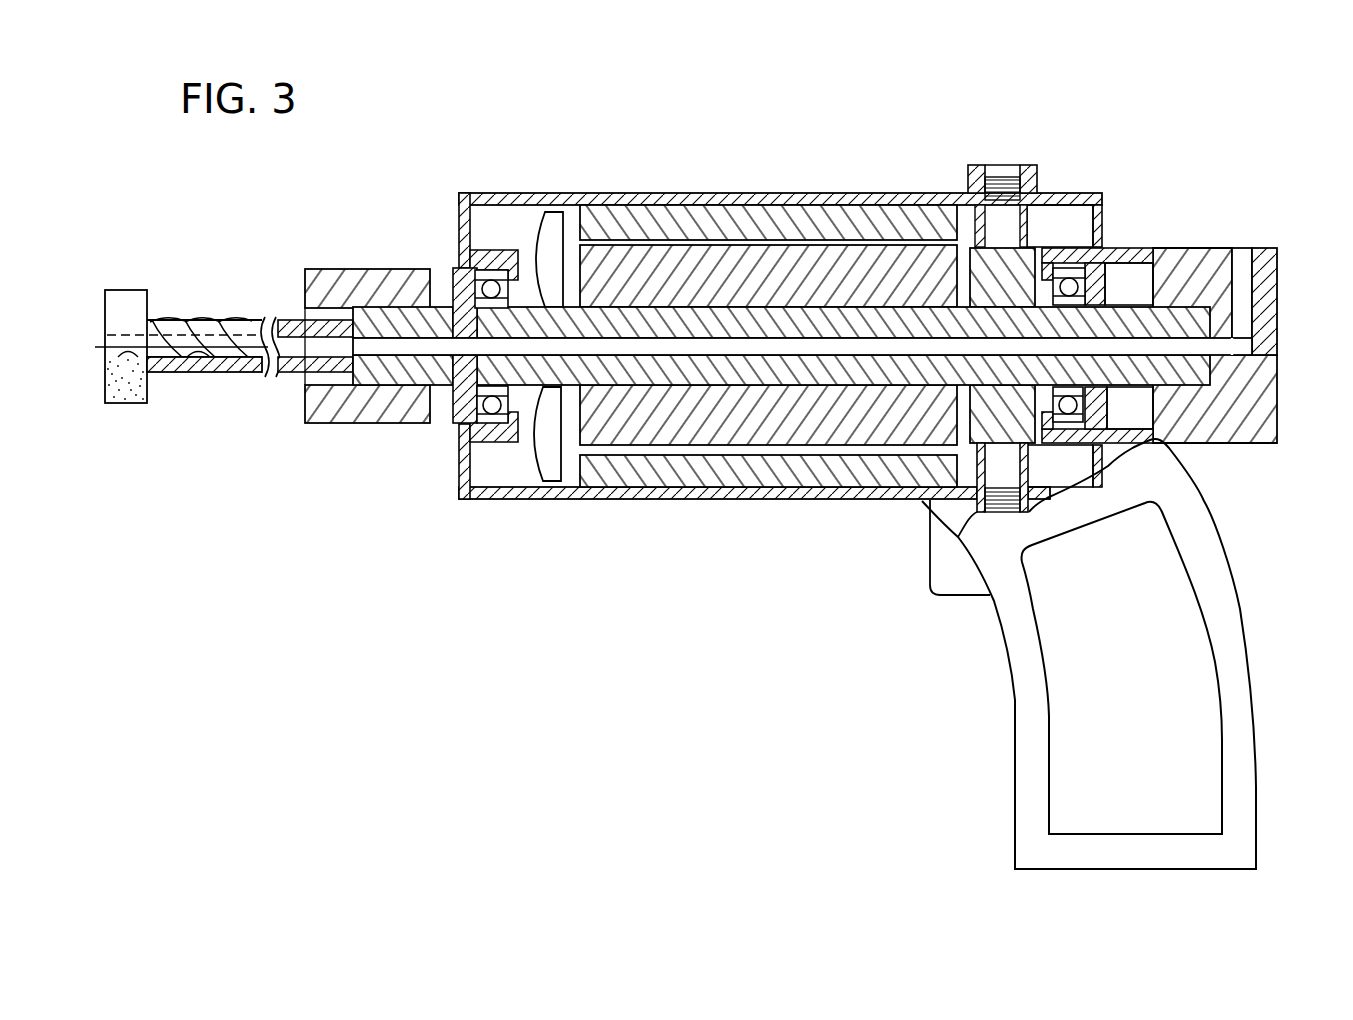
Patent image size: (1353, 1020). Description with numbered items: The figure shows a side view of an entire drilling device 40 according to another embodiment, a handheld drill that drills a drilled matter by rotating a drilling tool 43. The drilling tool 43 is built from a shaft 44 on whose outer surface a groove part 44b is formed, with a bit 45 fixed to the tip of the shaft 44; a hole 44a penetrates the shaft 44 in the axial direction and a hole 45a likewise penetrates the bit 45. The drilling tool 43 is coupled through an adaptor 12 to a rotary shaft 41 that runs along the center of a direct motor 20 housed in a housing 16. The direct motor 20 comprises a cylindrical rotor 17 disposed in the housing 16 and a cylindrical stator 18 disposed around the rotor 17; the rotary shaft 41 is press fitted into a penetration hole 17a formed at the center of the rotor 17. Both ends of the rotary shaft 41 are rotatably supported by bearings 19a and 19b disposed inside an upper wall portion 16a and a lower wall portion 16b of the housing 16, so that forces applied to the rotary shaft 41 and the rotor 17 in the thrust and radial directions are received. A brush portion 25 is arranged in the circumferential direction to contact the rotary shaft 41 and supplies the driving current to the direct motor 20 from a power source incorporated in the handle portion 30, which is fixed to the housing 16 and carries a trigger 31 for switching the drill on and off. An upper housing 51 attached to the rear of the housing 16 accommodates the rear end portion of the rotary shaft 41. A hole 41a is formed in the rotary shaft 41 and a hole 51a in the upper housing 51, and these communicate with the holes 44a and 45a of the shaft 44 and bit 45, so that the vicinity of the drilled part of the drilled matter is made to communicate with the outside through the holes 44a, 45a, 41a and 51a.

The adaptor 12 is at (365, 268).
The housing 16 is at (660, 193).
The upper wall portion 16a is at (1102, 200).
The lower wall portion 16b is at (457, 478).
The rotor 17 is at (628, 445).
The penetration hole 17a is at (812, 372).
The stator 18 is at (700, 482).
The bearing 19a is at (1076, 286).
The bearing 19b is at (494, 270).
The direct motor 20 is at (763, 204).
The brush portion 25 is at (975, 255).
The handle portion 30 is at (1075, 654).
The trigger 31 is at (933, 577).
The drilling device 40 is at (833, 322).
The rotary shaft 41 is at (802, 386).
The hole 41a is at (405, 340).
The drilling tool 43 is at (209, 340).
The shaft 44 is at (224, 337).
The hole 44a is at (220, 374).
The groove part 44b is at (216, 318).
The bit 45 is at (119, 353).
The hole 45a is at (135, 365).
The upper housing 51 is at (1233, 366).
The hole 51a is at (1258, 290).